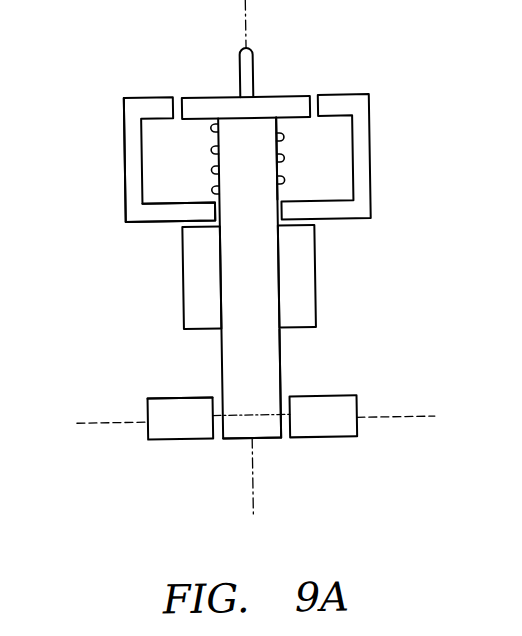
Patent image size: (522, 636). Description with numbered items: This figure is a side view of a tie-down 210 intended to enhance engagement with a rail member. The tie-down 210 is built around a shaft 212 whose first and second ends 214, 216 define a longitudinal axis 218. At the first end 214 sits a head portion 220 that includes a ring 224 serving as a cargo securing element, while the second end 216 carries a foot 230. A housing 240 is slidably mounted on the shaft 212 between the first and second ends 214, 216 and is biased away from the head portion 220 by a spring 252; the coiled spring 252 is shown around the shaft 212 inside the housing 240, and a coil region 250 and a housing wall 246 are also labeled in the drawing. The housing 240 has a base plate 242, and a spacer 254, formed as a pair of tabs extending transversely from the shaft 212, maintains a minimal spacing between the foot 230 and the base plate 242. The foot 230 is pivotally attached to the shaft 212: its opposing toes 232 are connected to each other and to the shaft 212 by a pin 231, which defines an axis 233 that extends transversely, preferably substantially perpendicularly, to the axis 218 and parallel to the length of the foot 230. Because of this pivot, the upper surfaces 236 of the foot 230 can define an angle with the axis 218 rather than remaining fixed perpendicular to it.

The tie-down 210 is at (386, 77).
The shaft 212 is at (289, 354).
The first end 214 is at (279, 127).
The second end 216 is at (282, 392).
The axis 218 is at (250, 10).
The head portion 220 is at (308, 86).
The ring 224 is at (256, 54).
The foot 230 is at (133, 390).
The pin 231 is at (245, 430).
The toes 232 is at (149, 406).
The axis 233 is at (390, 421).
The upper surfaces 236 is at (179, 397).
The housing 240 is at (114, 161).
The base plate 242 is at (144, 220).
The housing side wall 246 is at (128, 131).
The coil 250 is at (191, 170).
The spring 252 is at (292, 183).
The spacer 254 is at (315, 276).